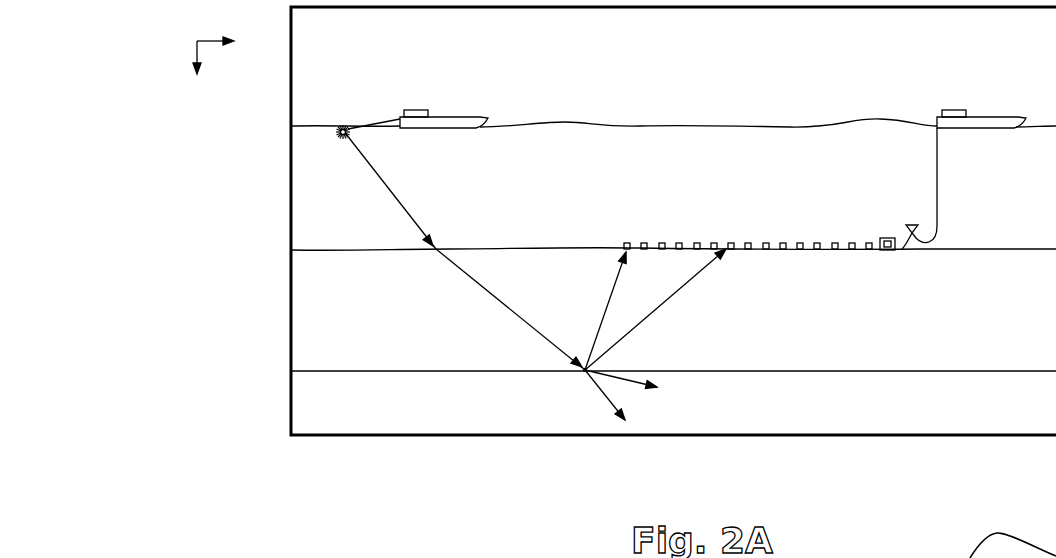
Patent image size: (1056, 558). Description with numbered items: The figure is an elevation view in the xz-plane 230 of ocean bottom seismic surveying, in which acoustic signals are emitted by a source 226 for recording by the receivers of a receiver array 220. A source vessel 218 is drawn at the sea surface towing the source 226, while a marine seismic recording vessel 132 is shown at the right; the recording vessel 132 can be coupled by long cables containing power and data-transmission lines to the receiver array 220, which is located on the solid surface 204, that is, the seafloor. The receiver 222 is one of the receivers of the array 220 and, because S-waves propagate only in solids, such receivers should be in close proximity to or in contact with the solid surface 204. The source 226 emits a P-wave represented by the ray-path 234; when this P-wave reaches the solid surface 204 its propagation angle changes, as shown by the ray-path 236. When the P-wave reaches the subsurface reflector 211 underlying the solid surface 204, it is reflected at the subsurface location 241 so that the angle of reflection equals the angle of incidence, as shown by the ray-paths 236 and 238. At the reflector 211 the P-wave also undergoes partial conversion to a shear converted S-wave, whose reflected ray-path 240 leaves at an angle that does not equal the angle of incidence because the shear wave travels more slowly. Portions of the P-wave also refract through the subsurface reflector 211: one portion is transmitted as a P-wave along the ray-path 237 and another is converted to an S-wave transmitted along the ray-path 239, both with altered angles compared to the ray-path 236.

The xz-plane 230 is at (192, 41).
The source 226 is at (340, 133).
The source vessel 218 is at (466, 116).
The marine seismic recording vessel 132 is at (1004, 116).
The ray-path 234 is at (380, 172).
The receiver 222 is at (627, 242).
The receiver array 220 is at (820, 252).
The solid surface 204 is at (335, 250).
The subsurface reflector 211 is at (335, 371).
The ray-path 240 is at (606, 307).
The ray-path 236 is at (505, 306).
The ray-path 238 is at (668, 307).
The subsurface location 241 is at (584, 372).
The ray-path 239 is at (591, 385).
The ray-path 237 is at (626, 387).